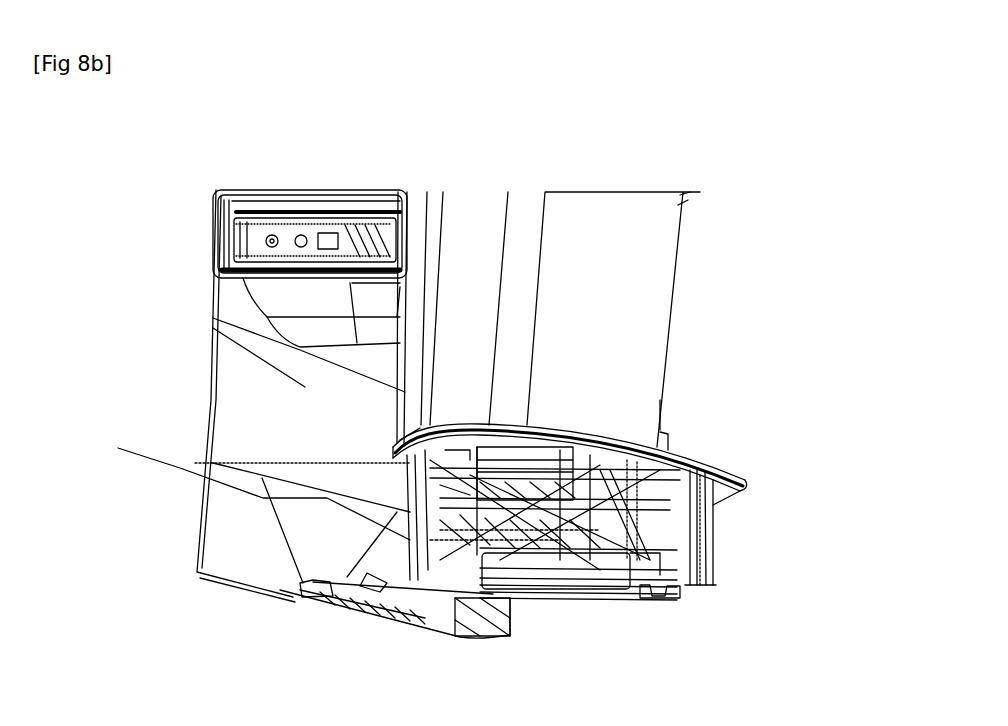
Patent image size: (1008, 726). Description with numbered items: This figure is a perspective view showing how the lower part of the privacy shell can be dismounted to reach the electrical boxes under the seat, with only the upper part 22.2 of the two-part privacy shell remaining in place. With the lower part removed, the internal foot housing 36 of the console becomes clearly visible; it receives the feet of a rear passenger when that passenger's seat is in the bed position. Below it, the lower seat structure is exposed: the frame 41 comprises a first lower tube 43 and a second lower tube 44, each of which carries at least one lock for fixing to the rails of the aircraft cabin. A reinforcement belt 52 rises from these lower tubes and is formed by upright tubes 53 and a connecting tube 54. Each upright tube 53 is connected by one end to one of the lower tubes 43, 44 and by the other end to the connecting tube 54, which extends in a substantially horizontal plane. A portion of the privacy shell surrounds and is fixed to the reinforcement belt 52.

The upper part 22.2 is at (627, 227).
The internal foot housing 36 is at (305, 387).
The frame 41 is at (687, 598).
The first lower tube 43 is at (517, 588).
The second lower tube 44 is at (248, 514).
The reinforcement belt 52 is at (400, 487).
The upright tubes 53 is at (645, 473).
The connecting tube 54 is at (448, 423).